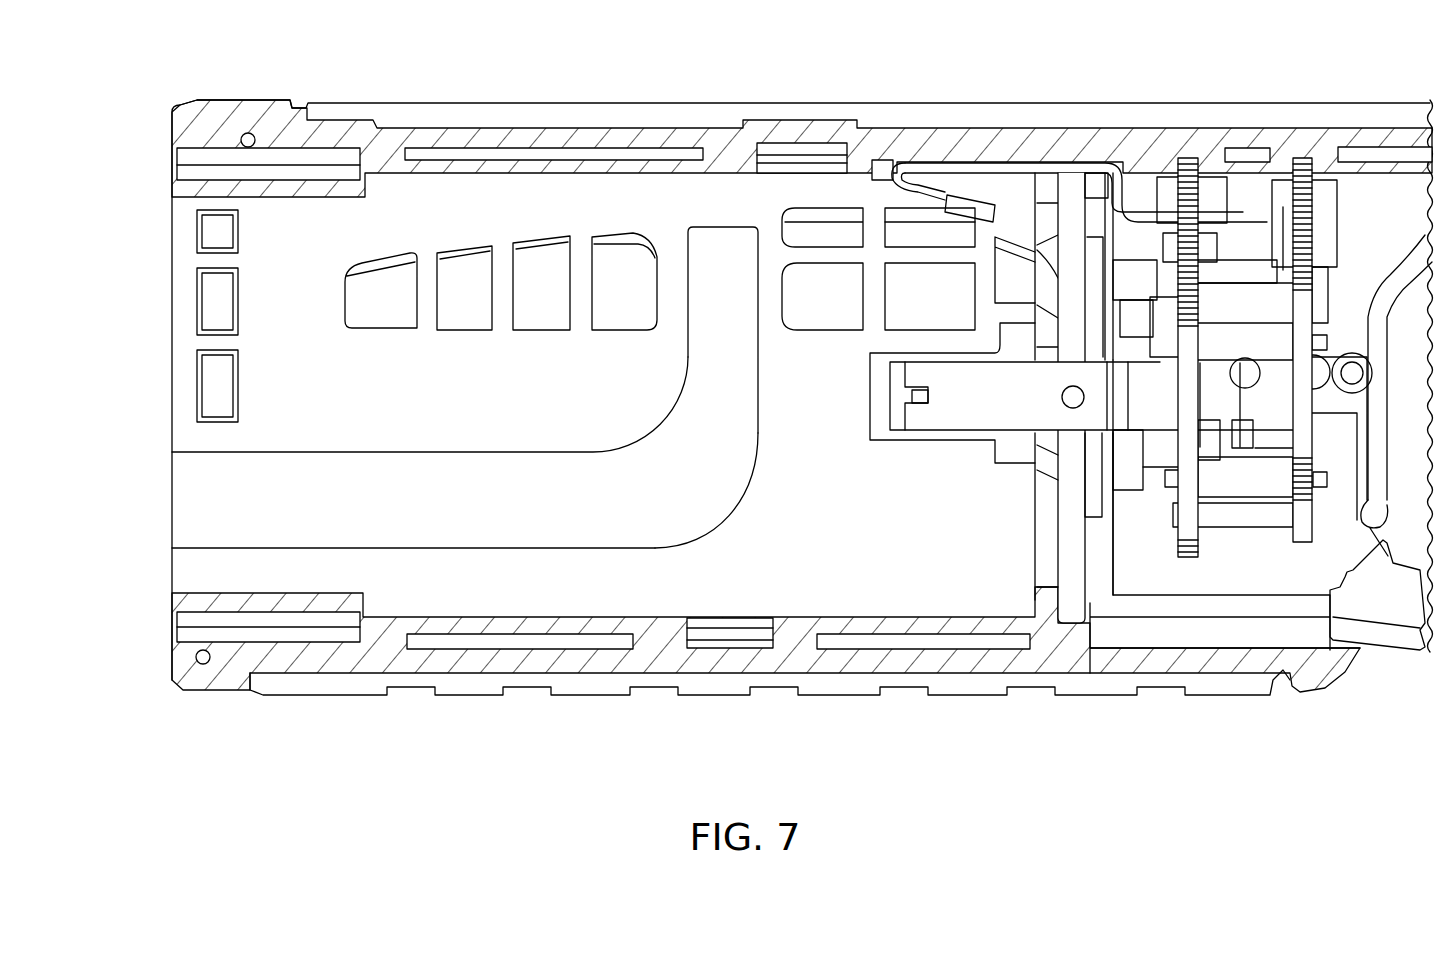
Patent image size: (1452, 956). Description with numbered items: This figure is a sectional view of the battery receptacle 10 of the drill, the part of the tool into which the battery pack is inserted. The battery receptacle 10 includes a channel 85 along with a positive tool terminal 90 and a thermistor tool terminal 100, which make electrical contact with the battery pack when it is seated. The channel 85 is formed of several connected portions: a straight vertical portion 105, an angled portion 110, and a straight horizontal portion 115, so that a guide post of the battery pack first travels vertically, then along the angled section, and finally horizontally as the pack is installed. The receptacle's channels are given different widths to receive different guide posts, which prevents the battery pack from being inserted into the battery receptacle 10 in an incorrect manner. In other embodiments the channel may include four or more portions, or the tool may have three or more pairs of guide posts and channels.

The battery receptacle 10 is at (163, 660).
The channel 85 is at (262, 482).
The positive tool terminal 90 is at (960, 398).
The thermistor tool terminal 100 is at (957, 203).
The straight vertical portion 105 is at (500, 522).
The angled portion 110 is at (702, 472).
The straight horizontal portion 115 is at (725, 250).